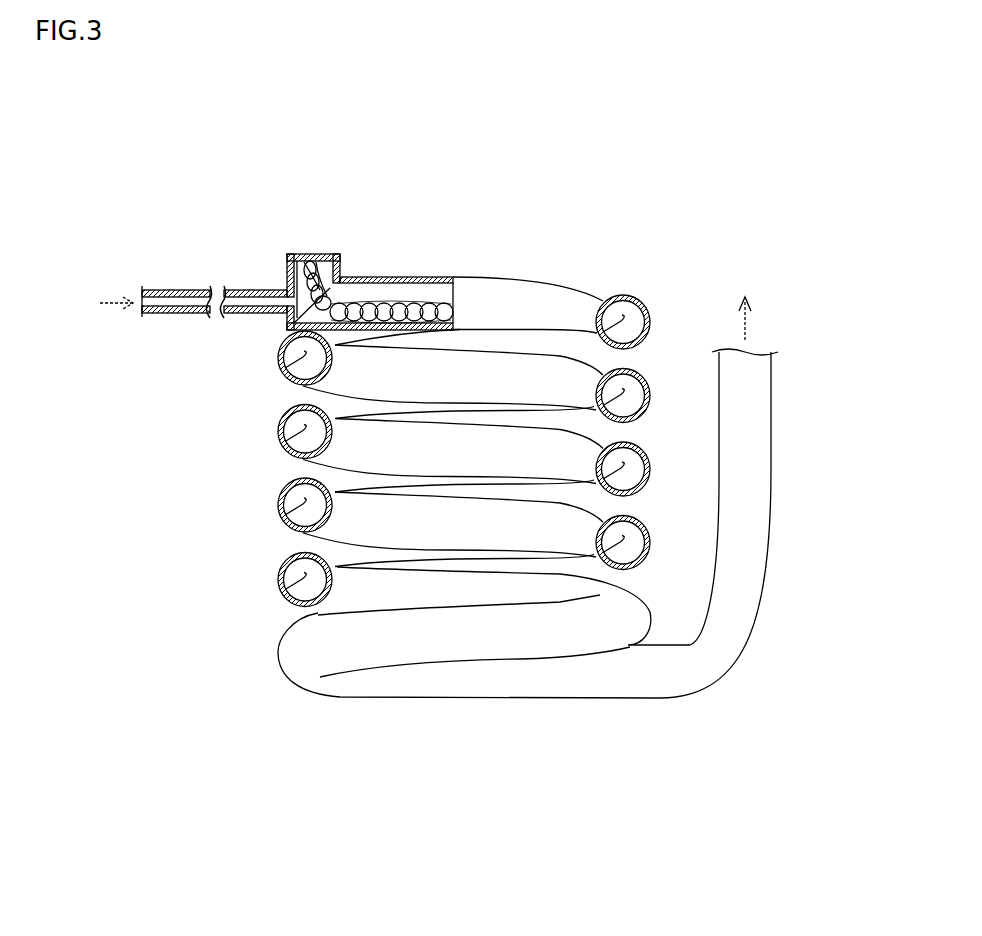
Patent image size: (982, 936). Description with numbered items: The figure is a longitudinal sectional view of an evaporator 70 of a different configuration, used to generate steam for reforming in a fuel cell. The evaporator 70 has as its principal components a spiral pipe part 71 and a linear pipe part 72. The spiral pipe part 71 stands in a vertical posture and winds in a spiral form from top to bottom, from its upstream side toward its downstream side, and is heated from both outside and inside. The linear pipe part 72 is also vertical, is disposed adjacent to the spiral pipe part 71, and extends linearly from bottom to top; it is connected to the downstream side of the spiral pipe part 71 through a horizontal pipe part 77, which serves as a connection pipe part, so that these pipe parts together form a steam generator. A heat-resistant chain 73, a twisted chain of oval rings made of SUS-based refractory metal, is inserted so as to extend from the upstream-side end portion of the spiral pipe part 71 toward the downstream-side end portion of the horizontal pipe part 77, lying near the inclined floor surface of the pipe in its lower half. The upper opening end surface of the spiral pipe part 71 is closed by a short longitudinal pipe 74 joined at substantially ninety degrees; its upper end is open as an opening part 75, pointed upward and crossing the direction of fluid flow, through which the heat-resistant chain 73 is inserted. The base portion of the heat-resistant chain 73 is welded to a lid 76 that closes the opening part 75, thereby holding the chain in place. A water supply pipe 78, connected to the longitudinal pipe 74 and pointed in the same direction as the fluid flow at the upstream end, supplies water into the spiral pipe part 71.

The evaporator 70 is at (243, 516).
The spiral pipe part 71 is at (481, 663).
The linear pipe part 72 is at (773, 447).
The heat-resistant chain 73 is at (377, 299).
The longitudinal pipe 74 is at (285, 272).
The opening part 75 is at (303, 253).
The lid 76 is at (330, 253).
The horizontal pipe part 77 is at (575, 700).
The water supply pipe 78 is at (172, 314).